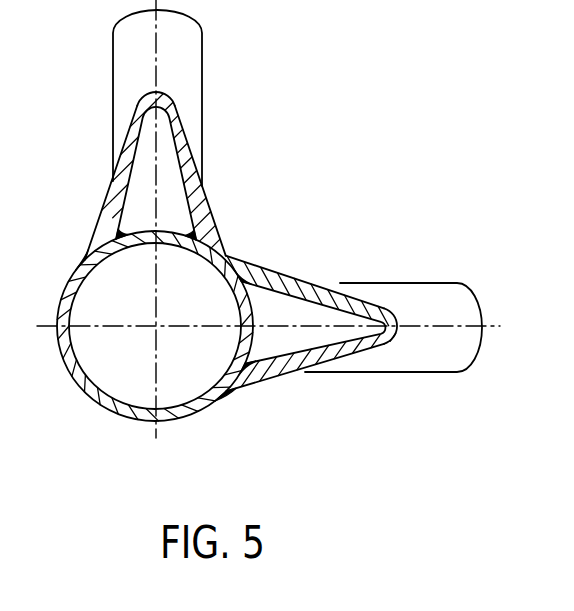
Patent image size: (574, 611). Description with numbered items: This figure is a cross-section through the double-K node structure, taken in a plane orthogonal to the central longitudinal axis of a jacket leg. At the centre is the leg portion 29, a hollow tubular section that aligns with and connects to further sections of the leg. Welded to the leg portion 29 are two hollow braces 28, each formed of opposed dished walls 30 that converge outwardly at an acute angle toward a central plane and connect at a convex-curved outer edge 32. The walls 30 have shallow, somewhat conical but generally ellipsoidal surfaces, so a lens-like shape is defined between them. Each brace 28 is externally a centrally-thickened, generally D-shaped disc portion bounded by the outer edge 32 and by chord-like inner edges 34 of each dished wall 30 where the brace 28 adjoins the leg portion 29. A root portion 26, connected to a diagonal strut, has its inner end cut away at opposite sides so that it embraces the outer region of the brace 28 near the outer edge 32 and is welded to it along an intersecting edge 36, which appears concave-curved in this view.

The root portion 26 is at (192, 67).
The hollow brace 28 is at (265, 303).
The leg portion 29 is at (98, 397).
The dished wall 30 is at (121, 163).
The convex-curved outer edge 32 is at (155, 90).
The chord-like inner edge 34 is at (92, 253).
The intersecting edge 36 is at (111, 188).